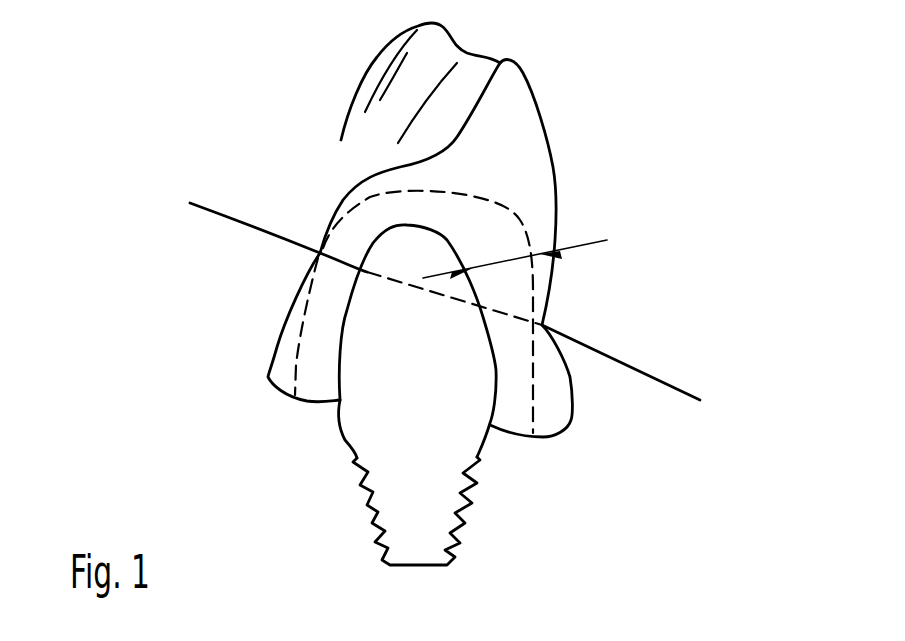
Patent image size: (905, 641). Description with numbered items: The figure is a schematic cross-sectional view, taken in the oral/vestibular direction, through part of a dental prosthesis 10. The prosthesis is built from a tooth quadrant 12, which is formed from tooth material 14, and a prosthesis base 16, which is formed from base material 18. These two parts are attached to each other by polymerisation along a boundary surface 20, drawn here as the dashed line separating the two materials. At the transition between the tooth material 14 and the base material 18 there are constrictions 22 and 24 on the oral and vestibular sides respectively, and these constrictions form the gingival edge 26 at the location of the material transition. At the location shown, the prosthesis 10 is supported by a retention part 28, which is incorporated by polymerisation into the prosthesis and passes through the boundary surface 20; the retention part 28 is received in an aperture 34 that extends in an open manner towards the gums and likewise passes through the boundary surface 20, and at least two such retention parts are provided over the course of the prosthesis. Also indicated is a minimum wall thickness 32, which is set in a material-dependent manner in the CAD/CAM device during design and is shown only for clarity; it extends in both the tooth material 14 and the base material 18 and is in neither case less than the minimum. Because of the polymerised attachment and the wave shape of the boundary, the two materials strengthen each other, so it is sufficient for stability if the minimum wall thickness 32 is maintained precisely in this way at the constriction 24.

The dental prosthesis 10 is at (622, 78).
The tooth quadrant 12 is at (410, 68).
The tooth material 14 is at (517, 147).
The prosthesis base 16 is at (226, 311).
The base material 18 is at (562, 416).
The boundary surface 20 is at (520, 310).
The constriction 22 is at (542, 325).
The constriction 24 is at (320, 253).
The gingival edge 26 is at (621, 343).
The retention part 28 is at (432, 368).
The minimum wall thickness 32 is at (501, 262).
The aperture 34 is at (370, 393).